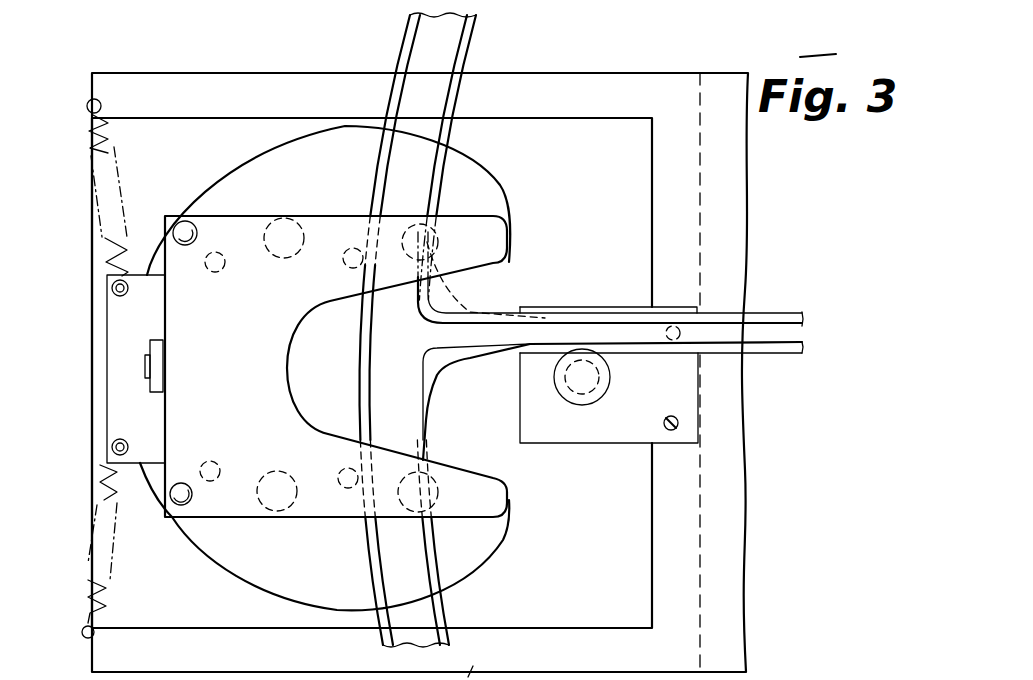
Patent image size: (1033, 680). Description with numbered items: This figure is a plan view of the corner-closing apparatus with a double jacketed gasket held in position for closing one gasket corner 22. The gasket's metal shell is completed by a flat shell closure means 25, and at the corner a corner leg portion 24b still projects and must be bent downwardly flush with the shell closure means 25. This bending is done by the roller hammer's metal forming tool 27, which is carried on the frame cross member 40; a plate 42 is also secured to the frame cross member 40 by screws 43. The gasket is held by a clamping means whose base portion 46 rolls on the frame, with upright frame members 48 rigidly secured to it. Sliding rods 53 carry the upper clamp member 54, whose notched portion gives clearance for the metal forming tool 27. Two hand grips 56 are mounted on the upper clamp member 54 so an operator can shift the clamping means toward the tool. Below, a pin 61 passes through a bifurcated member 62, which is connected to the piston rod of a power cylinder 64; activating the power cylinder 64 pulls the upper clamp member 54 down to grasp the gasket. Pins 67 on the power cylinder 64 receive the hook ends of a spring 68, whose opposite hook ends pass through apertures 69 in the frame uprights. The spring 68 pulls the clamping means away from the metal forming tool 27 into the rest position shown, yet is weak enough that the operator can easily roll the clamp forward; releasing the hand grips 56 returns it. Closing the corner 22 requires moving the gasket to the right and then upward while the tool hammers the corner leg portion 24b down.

The gasket corner 22 is at (455, 296).
The corner leg portion 24b is at (532, 353).
The shell closure means 25 is at (398, 164).
The metal forming tool 27 is at (590, 380).
The frame cross member 40 is at (551, 72).
The plate 42 is at (626, 425).
The screws 43 is at (670, 431).
The base portion 46 is at (488, 560).
The upright frame members 48 is at (285, 258).
The sliding rods 53 is at (213, 272).
The upper clamp member 54 is at (260, 367).
The hand grips 56 is at (181, 222).
The pin 61 is at (145, 366).
The bifurcated member 62 is at (158, 340).
The power cylinder 64 is at (138, 415).
The pins 67 is at (112, 288).
The spring 68 is at (110, 136).
The apertures 69 is at (101, 105).